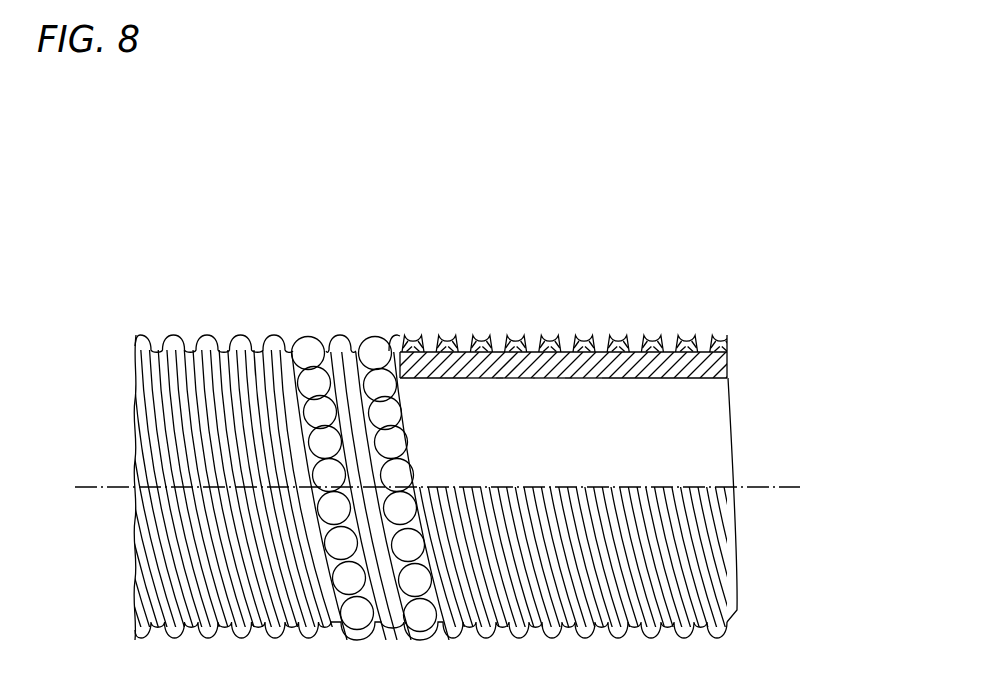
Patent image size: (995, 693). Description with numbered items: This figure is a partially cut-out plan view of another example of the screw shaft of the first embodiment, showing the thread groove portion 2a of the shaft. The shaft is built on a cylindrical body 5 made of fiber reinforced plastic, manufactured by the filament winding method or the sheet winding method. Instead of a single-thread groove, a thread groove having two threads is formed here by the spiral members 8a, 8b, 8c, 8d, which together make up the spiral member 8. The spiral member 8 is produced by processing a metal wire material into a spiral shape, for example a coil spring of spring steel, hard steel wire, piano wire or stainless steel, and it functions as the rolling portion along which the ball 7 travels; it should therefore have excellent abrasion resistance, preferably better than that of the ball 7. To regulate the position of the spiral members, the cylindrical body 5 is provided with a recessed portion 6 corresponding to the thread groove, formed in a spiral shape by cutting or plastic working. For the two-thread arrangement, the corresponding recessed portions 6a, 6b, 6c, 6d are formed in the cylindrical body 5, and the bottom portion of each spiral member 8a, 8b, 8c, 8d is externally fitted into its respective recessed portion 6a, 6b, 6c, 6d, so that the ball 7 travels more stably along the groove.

The thread groove portion 2a is at (362, 290).
The cylindrical body 5 is at (431, 352).
The recessed portion 6 is at (455, 425).
The recessed portion 6a is at (481, 379).
The recessed portion 6b is at (518, 379).
The recessed portion 6c is at (550, 379).
The recessed portion 6d is at (587, 379).
The ball 7 is at (304, 352).
The spiral member 8 is at (690, 258).
The spiral member 8a is at (474, 336).
The spiral member 8b is at (515, 337).
The spiral member 8c is at (550, 337).
The spiral member 8d is at (590, 337).